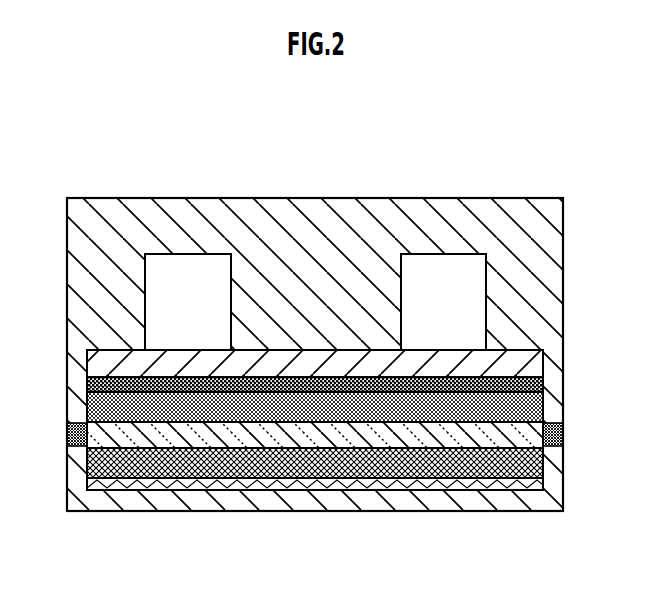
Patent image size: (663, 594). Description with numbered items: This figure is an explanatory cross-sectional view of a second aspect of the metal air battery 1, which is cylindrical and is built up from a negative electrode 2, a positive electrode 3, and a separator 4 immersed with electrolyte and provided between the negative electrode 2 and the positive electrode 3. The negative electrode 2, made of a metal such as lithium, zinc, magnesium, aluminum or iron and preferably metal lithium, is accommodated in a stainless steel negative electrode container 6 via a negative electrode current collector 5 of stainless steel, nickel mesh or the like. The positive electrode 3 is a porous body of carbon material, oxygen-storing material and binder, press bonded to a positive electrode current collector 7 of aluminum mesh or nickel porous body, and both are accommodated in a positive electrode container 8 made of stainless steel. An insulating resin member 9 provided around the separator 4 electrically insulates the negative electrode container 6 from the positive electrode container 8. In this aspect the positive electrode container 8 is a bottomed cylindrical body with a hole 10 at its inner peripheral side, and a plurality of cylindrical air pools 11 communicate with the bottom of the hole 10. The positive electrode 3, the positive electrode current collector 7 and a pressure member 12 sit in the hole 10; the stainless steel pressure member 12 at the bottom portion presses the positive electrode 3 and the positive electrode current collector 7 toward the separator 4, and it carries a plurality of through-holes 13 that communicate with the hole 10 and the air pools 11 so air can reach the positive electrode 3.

The metal air battery 1 is at (580, 141).
The negative electrode 2 is at (545, 464).
The positive electrode 3 is at (542, 382).
The separator 4 is at (544, 418).
The negative electrode current collector 5 is at (555, 491).
The negative electrode container 6 is at (495, 511).
The positive electrode current collector 7 is at (546, 366).
The positive electrode container 8 is at (563, 238).
The insulating resin member 9 is at (560, 437).
The hole 10 is at (87, 397).
The air pools 11 is at (192, 254).
The pressure member 12 is at (547, 351).
The through-holes 13 is at (156, 354).